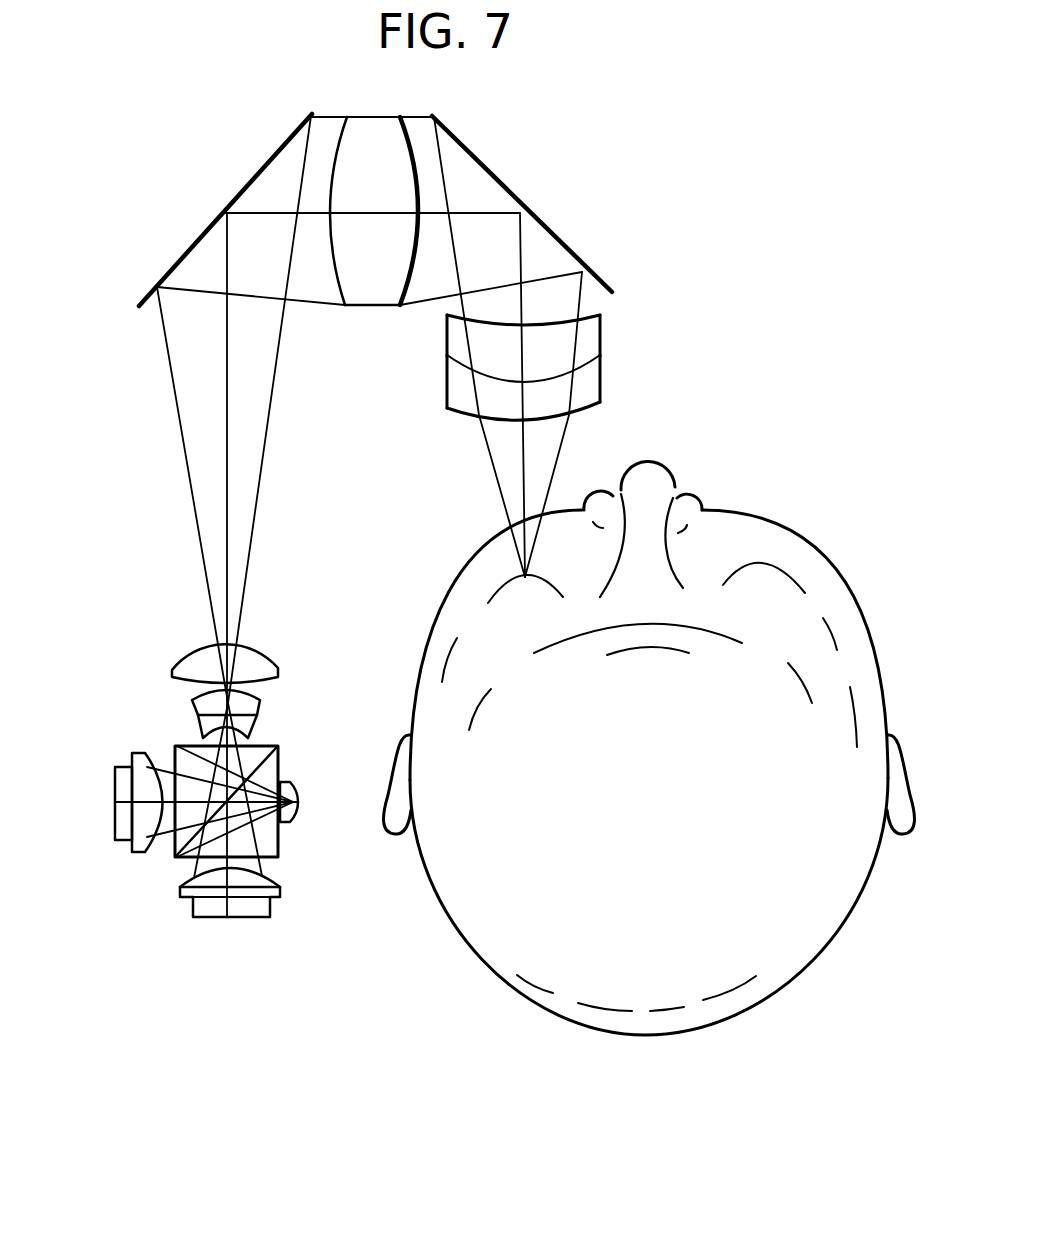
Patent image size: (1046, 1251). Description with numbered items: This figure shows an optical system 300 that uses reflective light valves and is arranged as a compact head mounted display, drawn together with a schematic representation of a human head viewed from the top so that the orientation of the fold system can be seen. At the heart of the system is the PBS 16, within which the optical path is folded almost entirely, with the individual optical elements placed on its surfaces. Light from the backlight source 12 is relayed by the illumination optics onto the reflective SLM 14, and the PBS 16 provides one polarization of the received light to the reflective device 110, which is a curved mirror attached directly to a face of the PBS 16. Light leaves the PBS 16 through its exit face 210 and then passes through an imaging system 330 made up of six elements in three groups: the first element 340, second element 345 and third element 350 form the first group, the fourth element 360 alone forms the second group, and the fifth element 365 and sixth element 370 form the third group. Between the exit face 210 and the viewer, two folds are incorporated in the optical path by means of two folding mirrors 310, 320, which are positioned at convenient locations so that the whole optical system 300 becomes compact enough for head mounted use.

The folding mirror 310 is at (238, 192).
The folding mirror 320 is at (551, 232).
The fourth element 360 is at (373, 301).
The fifth element 365 is at (594, 341).
The sixth element 370 is at (596, 380).
The imaging system 330 is at (173, 475).
The third element 350 is at (190, 657).
The second element 345 is at (198, 702).
The first element 340 is at (203, 727).
The optical system 300 is at (230, 1007).
The exit face 210 is at (260, 747).
The PBS 16 is at (173, 868).
The reflective device 110 is at (298, 800).
The backlight source 12 is at (113, 833).
The reflective SLM 14 is at (217, 917).